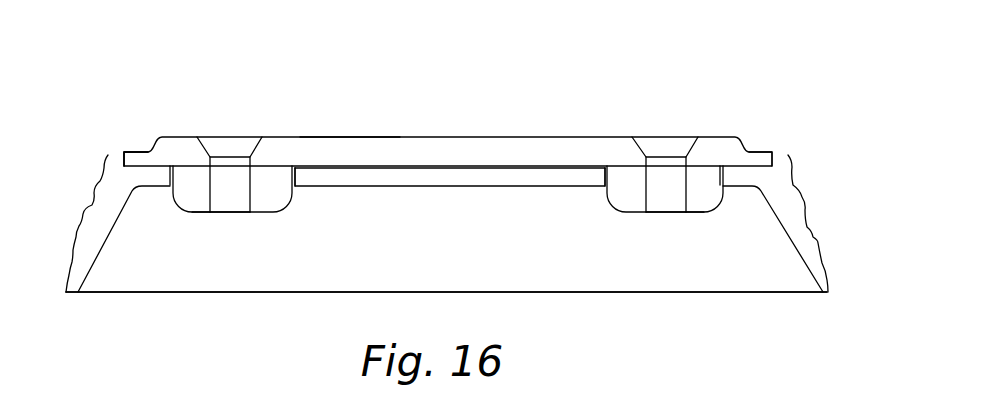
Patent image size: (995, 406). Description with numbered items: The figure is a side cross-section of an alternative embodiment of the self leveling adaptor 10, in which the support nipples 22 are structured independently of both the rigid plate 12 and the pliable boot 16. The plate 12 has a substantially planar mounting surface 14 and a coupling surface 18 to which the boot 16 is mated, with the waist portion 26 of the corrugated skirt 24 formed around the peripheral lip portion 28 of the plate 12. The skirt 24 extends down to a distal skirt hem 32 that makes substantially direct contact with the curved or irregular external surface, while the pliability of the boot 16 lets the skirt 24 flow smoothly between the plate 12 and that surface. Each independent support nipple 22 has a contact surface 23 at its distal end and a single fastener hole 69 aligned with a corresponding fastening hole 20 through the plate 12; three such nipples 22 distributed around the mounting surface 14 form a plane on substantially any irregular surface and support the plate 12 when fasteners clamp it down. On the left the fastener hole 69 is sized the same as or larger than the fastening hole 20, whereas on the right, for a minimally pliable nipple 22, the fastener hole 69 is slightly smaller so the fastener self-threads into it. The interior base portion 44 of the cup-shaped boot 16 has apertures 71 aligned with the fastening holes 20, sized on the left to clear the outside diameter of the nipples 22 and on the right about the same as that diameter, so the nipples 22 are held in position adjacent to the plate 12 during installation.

The self leveling adaptor 10 is at (298, 51).
The plate 12 is at (343, 148).
The mounting surface 14 is at (381, 137).
The pliable boot 16 is at (92, 236).
The coupling surface 18 is at (480, 168).
The fastening hole 20 is at (223, 137).
The support nipple 22 is at (283, 207).
The surface 23 is at (203, 215).
The skirt 24 is at (72, 248).
The waist portion 26 is at (108, 160).
The peripheral lip portion 28 is at (131, 158).
The skirt hem 32 is at (66, 292).
The interior base portion 44 is at (378, 187).
The fastener hole 69 is at (229, 215).
The aperture 71 is at (290, 188).